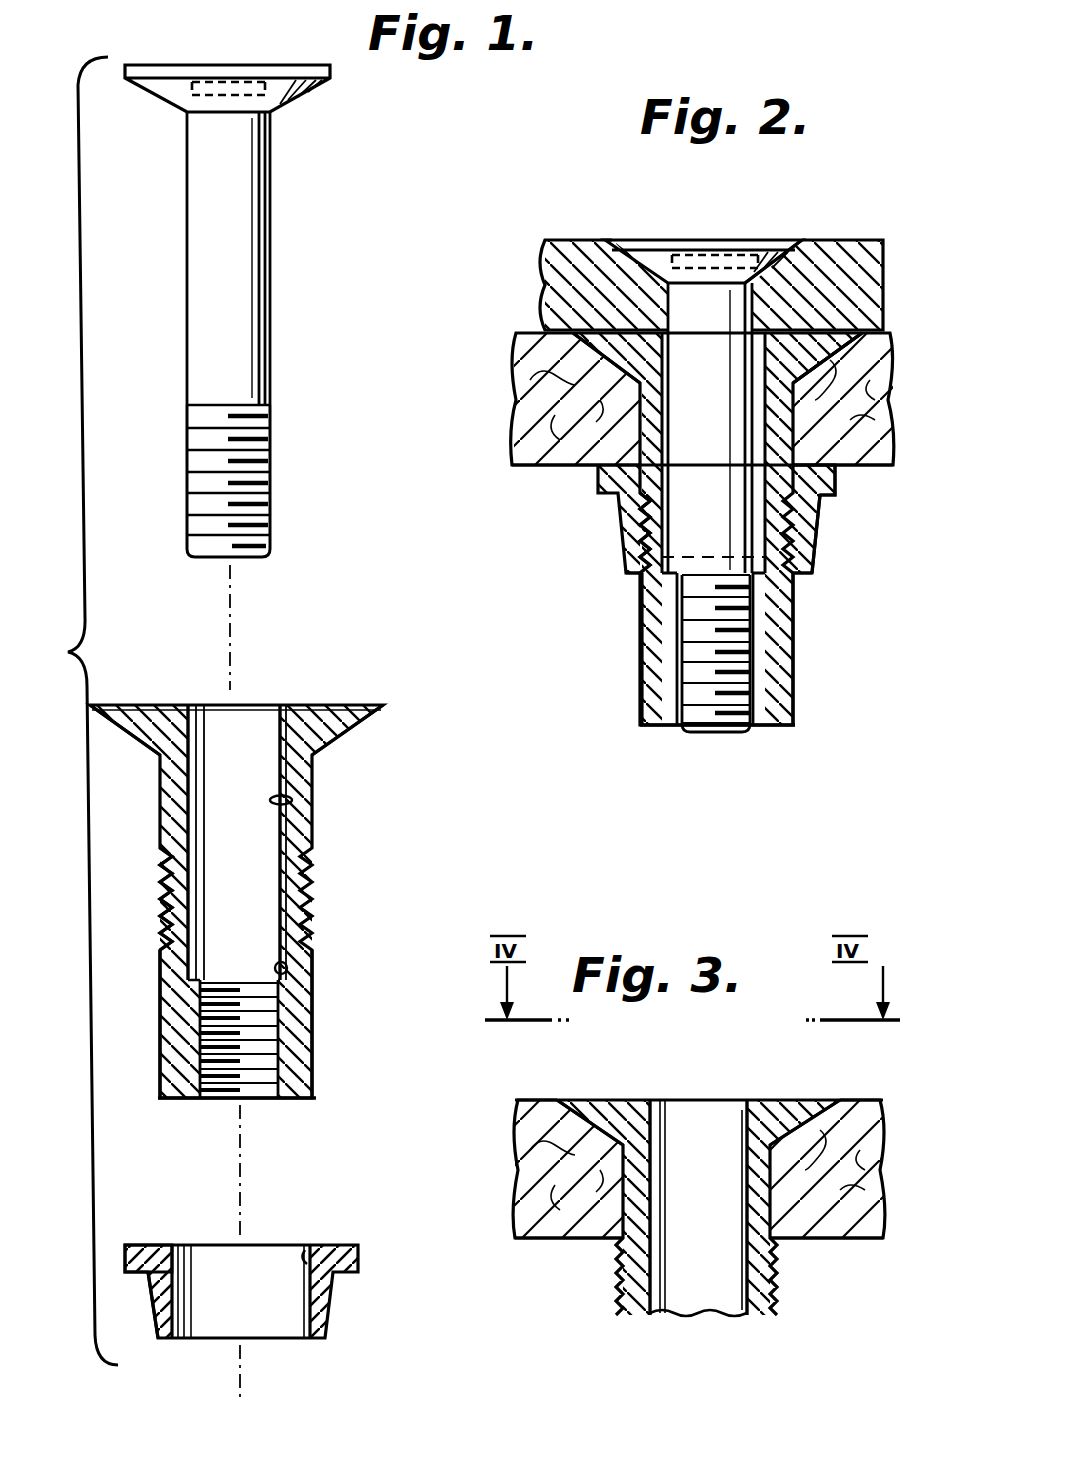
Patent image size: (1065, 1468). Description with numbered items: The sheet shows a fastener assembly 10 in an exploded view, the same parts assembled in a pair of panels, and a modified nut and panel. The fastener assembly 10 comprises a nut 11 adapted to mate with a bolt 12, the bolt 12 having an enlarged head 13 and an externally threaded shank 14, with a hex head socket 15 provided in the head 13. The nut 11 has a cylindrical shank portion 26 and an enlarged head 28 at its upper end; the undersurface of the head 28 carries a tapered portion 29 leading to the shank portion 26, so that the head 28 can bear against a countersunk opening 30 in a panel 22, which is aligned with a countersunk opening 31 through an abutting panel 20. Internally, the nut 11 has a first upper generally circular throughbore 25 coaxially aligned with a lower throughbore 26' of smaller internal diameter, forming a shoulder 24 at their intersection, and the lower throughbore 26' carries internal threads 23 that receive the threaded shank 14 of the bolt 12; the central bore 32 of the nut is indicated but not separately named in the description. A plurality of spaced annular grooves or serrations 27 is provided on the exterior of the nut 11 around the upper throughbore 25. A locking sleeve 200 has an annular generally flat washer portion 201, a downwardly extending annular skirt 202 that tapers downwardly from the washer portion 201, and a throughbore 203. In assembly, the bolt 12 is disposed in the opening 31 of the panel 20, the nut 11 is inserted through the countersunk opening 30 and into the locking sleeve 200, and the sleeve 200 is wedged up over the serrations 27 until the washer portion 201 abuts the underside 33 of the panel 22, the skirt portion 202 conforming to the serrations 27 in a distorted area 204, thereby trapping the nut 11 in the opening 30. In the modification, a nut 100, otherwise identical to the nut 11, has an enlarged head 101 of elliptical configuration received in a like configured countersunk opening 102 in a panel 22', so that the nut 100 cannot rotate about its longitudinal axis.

In FIG. 1, the fastener assembly 10 is at (72, 711).
In FIG. 1, the nut 11 is at (326, 880).
In FIG. 1, the bolt 12 is at (292, 254).
In FIG. 2, the bolt 12 is at (630, 232).
In FIG. 1, the enlarged head 13 is at (160, 92).
In FIG. 2, the enlarged head 13 is at (655, 262).
In FIG. 1, the externally threaded shank 14 is at (258, 462).
In FIG. 2, the externally threaded shank 14 is at (736, 700).
In FIG. 1, the hex head socket 15 is at (208, 72).
In FIG. 2, the hex head socket 15 is at (686, 260).
In FIG. 2, the panel 20 is at (674, 262).
In FIG. 2, the panel 22 is at (645, 427).
In FIG. 3, the panel 22' is at (698, 1167).
In FIG. 1, the threads 23 is at (216, 1068).
In FIG. 2, the threads 23 is at (686, 630).
In FIG. 1, the shoulder 24 is at (286, 968).
In FIG. 1, the first upper internal throughbore 25 is at (284, 800).
In FIG. 1, the cylindrical shank portion 26 is at (280, 1024).
In FIG. 2, the cylindrical shank portion 26 is at (751, 666).
In FIG. 1, the lower internal throughbore 26' is at (274, 1106).
In FIG. 2, the lower internal throughbore 26' is at (672, 704).
In FIG. 1, the annular grooves or serrations 27 is at (160, 882).
In FIG. 2, the annular grooves or serrations 27 is at (602, 492).
In FIG. 1, the enlarged head 28 is at (345, 724).
In FIG. 1, the tapered portion 29 is at (128, 742).
In FIG. 2, the tapered portion 29 is at (612, 346).
In FIG. 2, the countersunk opening 30 is at (820, 345).
In FIG. 2, the countersunk opening 31 is at (758, 270).
In FIG. 1, the bore of insert 32 is at (250, 728).
In FIG. 3, the bore of insert 32 is at (700, 1125).
In FIG. 2, the underside 33 is at (514, 470).
In FIG. 3, the underside 33 is at (790, 1240).
In FIG. 3, the nut 100 is at (762, 1314).
In FIG. 3, the enlarged head 101 is at (602, 1100).
In FIG. 3, the countersunk opening 102 is at (794, 1100).
In FIG. 1, the locking sleeve 200 is at (342, 1312).
In FIG. 2, the locking sleeve 200 is at (618, 536).
In FIG. 1, the washer portion 201 is at (140, 1246).
In FIG. 2, the washer portion 201 is at (838, 478).
In FIG. 1, the annular skirt 202 is at (154, 1310).
In FIG. 2, the annular skirt 202 is at (806, 509).
In FIG. 1, the throughbore 203 is at (300, 1260).
In FIG. 2, the distorted area 204 is at (800, 578).